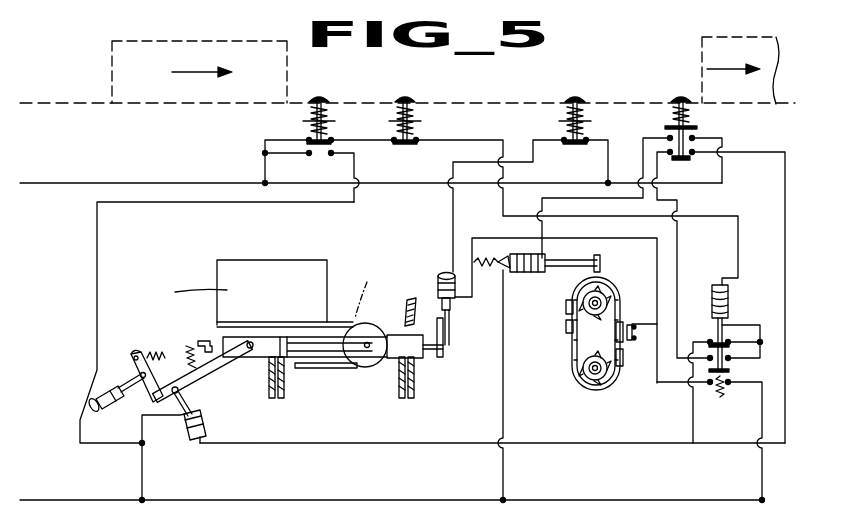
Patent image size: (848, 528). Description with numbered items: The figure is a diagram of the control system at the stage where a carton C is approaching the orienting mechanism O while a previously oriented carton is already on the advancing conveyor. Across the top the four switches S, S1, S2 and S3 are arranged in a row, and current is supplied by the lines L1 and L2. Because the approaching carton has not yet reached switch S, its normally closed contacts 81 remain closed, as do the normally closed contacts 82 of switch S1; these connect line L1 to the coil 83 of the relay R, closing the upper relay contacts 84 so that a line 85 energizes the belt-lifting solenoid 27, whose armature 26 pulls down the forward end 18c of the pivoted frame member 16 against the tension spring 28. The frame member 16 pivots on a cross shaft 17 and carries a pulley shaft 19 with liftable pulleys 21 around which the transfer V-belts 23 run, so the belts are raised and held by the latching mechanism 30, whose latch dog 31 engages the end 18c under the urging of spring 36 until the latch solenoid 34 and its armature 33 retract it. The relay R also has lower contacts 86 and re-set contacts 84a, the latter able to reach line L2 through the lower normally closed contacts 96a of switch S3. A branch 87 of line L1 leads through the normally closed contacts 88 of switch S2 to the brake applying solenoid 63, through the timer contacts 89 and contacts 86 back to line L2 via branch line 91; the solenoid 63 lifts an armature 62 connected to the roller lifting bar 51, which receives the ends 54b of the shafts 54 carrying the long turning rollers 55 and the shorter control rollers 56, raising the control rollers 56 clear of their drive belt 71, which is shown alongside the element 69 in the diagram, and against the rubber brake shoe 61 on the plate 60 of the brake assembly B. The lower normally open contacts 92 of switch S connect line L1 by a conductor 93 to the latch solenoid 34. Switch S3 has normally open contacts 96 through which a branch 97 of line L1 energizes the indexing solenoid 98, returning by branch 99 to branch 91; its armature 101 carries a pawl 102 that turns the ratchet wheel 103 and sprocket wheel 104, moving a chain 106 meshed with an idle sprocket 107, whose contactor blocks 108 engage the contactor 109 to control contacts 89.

The carton C is at (112, 41).
The line L1 is at (56, 186).
The line L2 is at (54, 507).
The transfer belt-lowering and brake-applying switch S is at (322, 98).
The belt lowering switch S1 is at (408, 98).
The brake release switch S2 is at (578, 98).
The indexing switch S3 is at (678, 98).
The normally closed contacts 81 is at (307, 139).
The normally closed contacts 82 is at (418, 139).
The normally closed contacts 88 is at (562, 139).
The lower normally open contacts 92 is at (309, 156).
The conductor 93 is at (97, 247).
The branch of line L1 87 is at (385, 186).
The normally open contacts 96 is at (694, 138).
The lower normally closed contacts 96a is at (694, 154).
The branch of line L1 97 is at (722, 183).
The relay coil 83 is at (722, 283).
The relay R is at (740, 320).
The upper relay contacts 84 is at (709, 341).
The re-set contacts 84a is at (730, 360).
The lower relay contacts 86 is at (730, 384).
The line 85 is at (446, 444).
The branch line 91 is at (446, 500).
The branch 99 is at (504, 386).
The indexing solenoid 98 is at (506, 258).
The solenoid armature 101 is at (560, 260).
The pawl 102 is at (614, 244).
The counter or timer contacts 89 is at (616, 318).
The ratchet wheel 103 is at (570, 296).
The sprocket wheel 104 is at (570, 305).
The contactor blocks 108 is at (570, 323).
The chain 106 is at (574, 352).
The idle sprocket 107 is at (574, 368).
The contactor 109 is at (634, 333).
The brake applying solenoid 63 is at (440, 263).
The armature 62 is at (456, 292).
The longitudinal plate 60 is at (412, 298).
The brake assembly B is at (404, 310).
The rubber brake shoe 61 is at (355, 320).
The orienting mechanism O is at (290, 315).
The article turning and advancing roller 55 is at (223, 338).
The transfer conveyor V-belts 23 is at (325, 369).
The vertically liftable pulleys 21 is at (368, 368).
The pulley shaft 19 is at (415, 346).
The roller lifting bar 51 is at (450, 348).
The turn control roller 56 is at (425, 359).
The shaft end 54b is at (444, 338).
The drive belt 71 is at (285, 376).
The brush 69 is at (279, 398).
The pivoted frame member 16 is at (225, 372).
The cross shaft 17 is at (250, 349).
The forward end of pivotal frame 18c is at (186, 385).
The latch dog 31 is at (134, 352).
The latching mechanism 30 is at (128, 403).
The armature 33 is at (96, 394).
The latch solenoid 34 is at (90, 406).
The spring 36 is at (158, 352).
The tension spring 28 is at (187, 346).
The shaft 54 is at (203, 340).
The armature 26 is at (185, 429).
The belt-lifting solenoid 27 is at (206, 428).